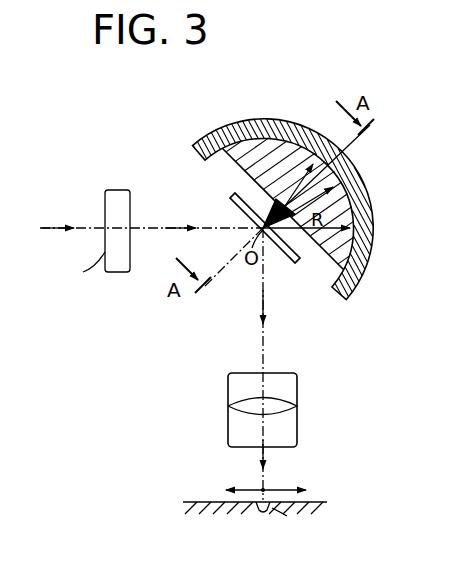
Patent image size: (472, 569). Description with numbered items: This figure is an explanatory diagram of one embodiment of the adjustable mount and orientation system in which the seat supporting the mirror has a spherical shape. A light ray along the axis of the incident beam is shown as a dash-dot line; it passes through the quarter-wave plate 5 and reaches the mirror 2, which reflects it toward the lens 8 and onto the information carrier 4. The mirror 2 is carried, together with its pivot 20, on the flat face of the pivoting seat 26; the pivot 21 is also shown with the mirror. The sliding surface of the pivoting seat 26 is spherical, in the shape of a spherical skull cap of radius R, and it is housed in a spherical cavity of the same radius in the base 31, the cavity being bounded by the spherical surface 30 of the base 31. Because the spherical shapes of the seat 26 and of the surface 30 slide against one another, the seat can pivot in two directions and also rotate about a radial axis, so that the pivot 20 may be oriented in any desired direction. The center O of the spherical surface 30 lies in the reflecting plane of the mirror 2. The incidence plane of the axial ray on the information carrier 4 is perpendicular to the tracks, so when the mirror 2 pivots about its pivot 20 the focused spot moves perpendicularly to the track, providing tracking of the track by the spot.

The mirror 2 is at (285, 252).
The information carrier 4 is at (200, 500).
The quarter-wave plate 5 is at (104, 200).
The lens 8 is at (297, 388).
The pivot 20 is at (248, 209).
The pivot 21 is at (283, 208).
The pivoting seat 26 is at (370, 198).
The surface 30 is at (214, 160).
The base 31 is at (278, 123).